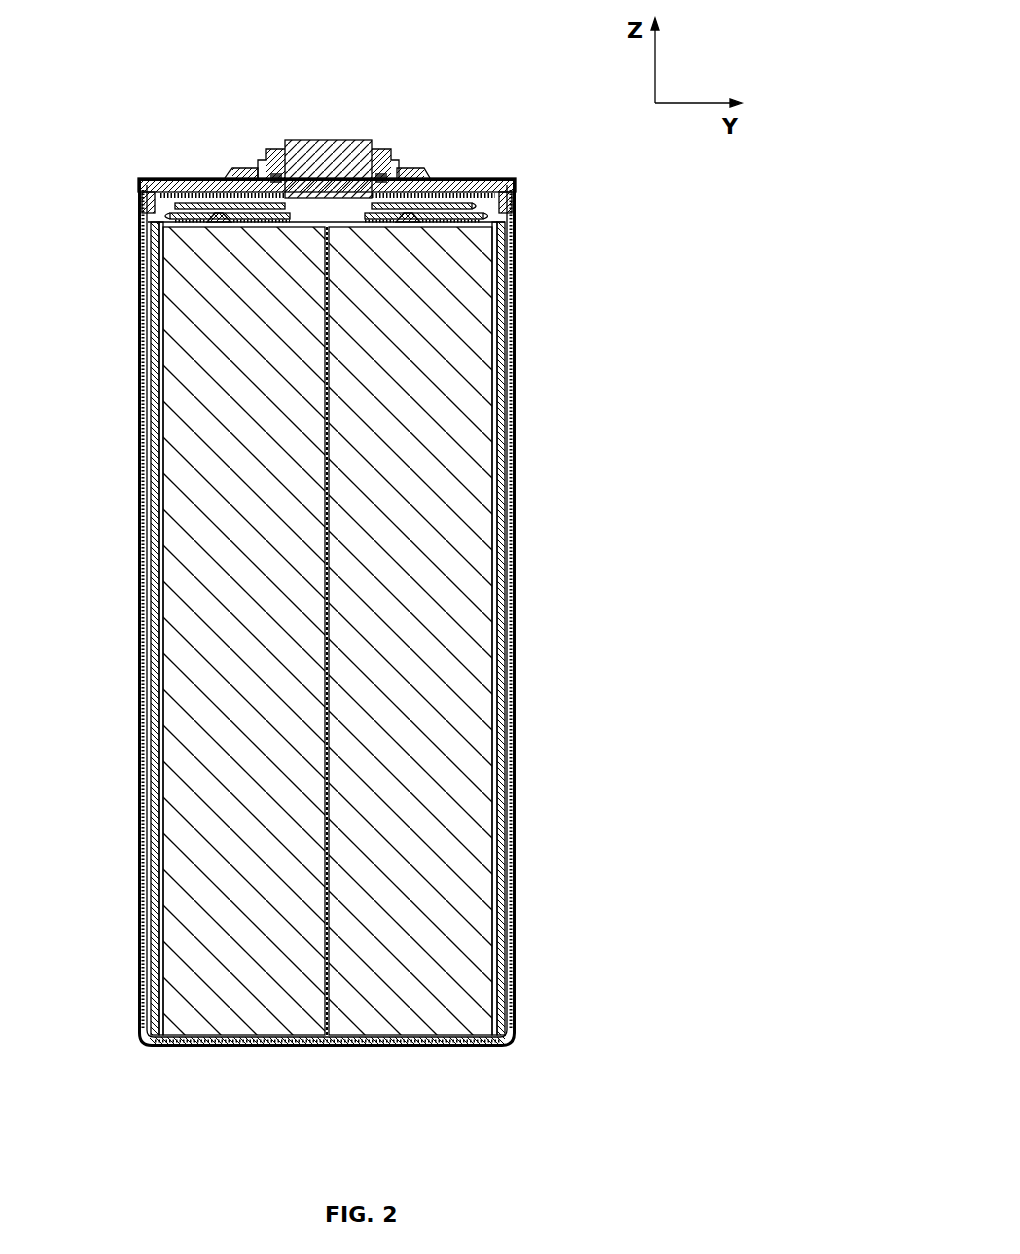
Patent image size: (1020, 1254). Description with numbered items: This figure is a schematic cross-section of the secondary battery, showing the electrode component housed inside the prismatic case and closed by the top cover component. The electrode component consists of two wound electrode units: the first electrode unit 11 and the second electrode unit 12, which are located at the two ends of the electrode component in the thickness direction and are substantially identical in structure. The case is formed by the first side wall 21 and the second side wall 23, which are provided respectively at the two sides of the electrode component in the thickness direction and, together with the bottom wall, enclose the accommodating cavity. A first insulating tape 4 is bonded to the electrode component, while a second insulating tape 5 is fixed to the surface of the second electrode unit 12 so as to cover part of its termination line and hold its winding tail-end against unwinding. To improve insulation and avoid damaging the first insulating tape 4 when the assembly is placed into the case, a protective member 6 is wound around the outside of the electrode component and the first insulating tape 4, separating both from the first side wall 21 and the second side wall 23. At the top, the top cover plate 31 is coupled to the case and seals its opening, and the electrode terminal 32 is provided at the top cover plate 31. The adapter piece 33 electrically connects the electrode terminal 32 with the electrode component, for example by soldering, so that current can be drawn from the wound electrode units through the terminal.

The first insulating tape 4 is at (159, 504).
The second insulating tape 5 is at (498, 493).
The protective member 6 is at (153, 440).
The first electrode unit 11 is at (252, 1020).
The second electrode unit 12 is at (406, 1022).
The first side wall 21 is at (139, 664).
The second side wall 23 is at (515, 672).
The top cover plate 31 is at (455, 183).
The electrode terminal 32 is at (327, 150).
The adapter piece 33 is at (210, 180).